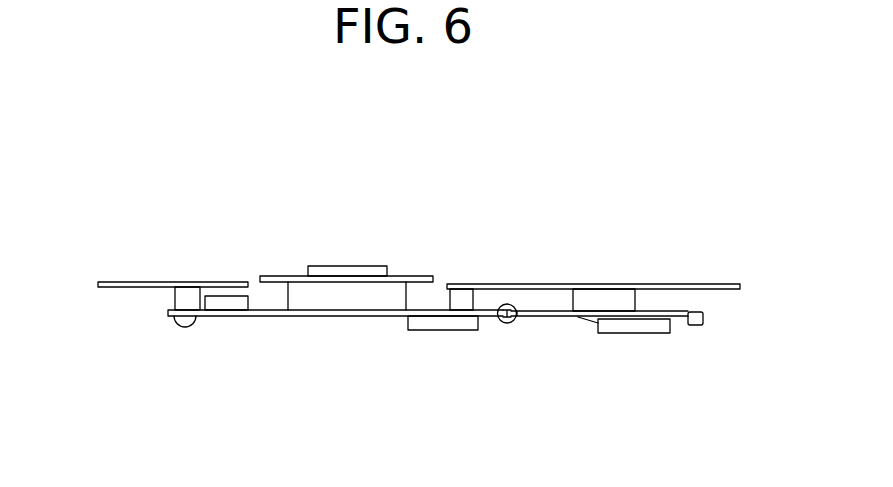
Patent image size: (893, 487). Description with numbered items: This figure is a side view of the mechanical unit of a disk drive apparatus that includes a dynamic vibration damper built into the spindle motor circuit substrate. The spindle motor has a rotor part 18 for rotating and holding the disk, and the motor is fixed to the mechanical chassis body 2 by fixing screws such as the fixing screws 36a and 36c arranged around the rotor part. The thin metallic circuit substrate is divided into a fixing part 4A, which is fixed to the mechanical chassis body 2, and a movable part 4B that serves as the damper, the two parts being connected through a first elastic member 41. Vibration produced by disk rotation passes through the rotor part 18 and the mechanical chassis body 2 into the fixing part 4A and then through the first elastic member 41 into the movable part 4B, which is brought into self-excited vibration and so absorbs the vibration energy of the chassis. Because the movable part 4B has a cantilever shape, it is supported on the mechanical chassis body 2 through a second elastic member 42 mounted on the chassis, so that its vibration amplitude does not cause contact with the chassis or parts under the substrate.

The mechanical chassis body 2 is at (119, 282).
The rotor part 18 is at (393, 295).
The fixing screw 36a is at (178, 298).
The fixing screw 36c is at (460, 302).
The first elastic member 41 is at (507, 324).
The second elastic member 42 is at (598, 298).
The fixing part 4A is at (280, 318).
The movable part 4B is at (571, 330).